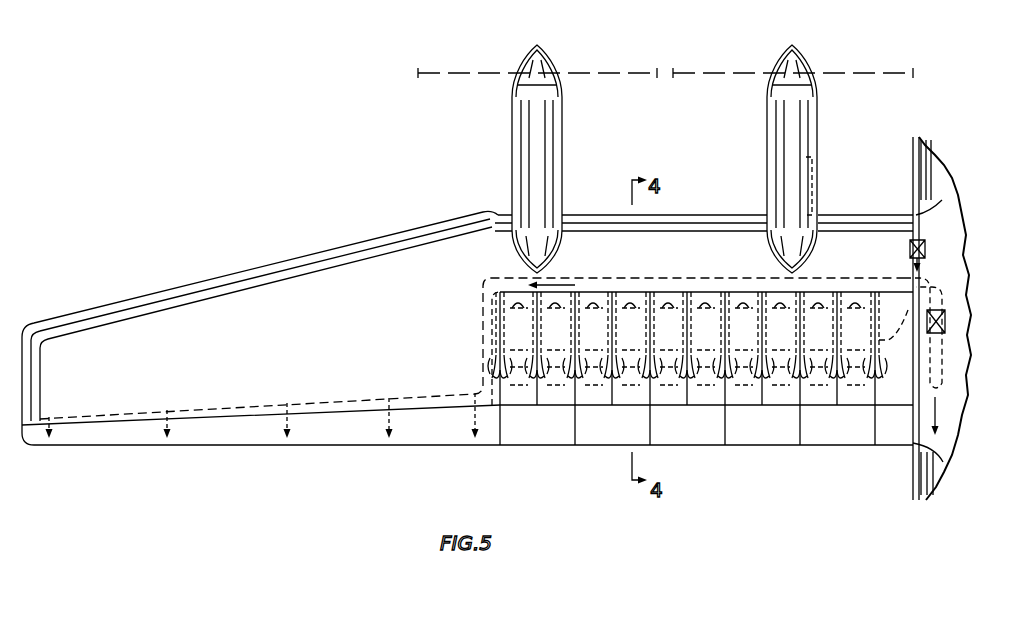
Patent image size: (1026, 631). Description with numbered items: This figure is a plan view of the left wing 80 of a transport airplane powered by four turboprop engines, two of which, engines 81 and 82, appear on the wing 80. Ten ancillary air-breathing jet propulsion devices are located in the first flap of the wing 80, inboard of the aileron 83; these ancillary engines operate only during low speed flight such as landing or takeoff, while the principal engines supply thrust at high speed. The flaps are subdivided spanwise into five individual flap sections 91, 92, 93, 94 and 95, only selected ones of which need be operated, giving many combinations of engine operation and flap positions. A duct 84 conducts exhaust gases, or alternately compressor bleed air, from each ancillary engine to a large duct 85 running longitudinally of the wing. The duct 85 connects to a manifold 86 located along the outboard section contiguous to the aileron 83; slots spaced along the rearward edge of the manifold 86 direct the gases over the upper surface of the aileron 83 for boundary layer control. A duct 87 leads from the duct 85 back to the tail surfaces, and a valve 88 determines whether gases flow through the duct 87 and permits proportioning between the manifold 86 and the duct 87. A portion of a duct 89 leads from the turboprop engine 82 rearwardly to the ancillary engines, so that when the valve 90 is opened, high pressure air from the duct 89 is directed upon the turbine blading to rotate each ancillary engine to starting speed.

The left wing 80 is at (347, 247).
The turboprop engine 81 is at (563, 155).
The turboprop engine 82 is at (815, 152).
The aileron 83 is at (377, 436).
The duct 84 is at (500, 370).
The duct 85 is at (675, 279).
The manifold 86 is at (246, 407).
The duct 87 is at (942, 358).
The valve 88 is at (945, 322).
The duct 89 is at (848, 216).
The valve 90 is at (925, 246).
The flap section 91 is at (533, 435).
The flap section 92 is at (596, 433).
The flap section 93 is at (688, 432).
The flap section 94 is at (768, 432).
The flap section 95 is at (842, 434).